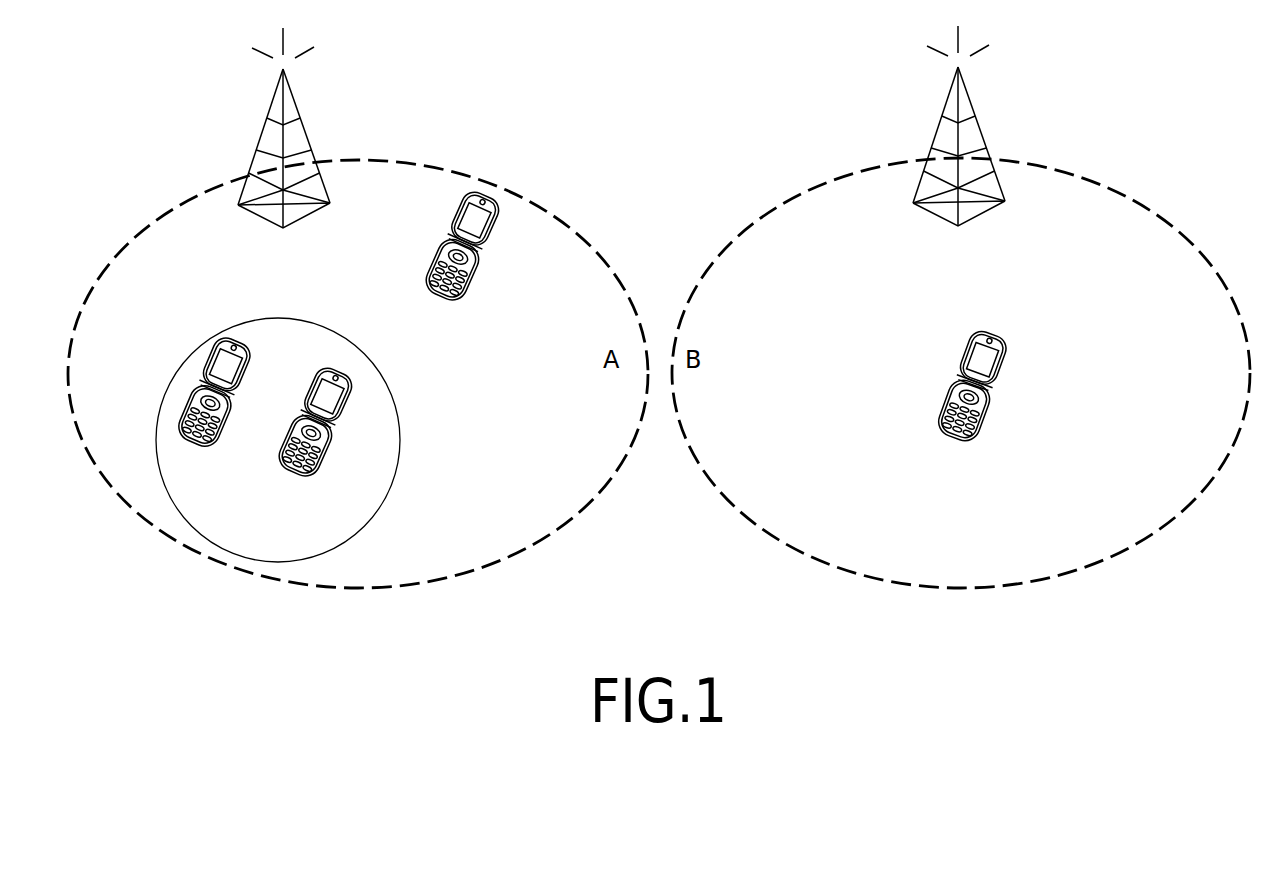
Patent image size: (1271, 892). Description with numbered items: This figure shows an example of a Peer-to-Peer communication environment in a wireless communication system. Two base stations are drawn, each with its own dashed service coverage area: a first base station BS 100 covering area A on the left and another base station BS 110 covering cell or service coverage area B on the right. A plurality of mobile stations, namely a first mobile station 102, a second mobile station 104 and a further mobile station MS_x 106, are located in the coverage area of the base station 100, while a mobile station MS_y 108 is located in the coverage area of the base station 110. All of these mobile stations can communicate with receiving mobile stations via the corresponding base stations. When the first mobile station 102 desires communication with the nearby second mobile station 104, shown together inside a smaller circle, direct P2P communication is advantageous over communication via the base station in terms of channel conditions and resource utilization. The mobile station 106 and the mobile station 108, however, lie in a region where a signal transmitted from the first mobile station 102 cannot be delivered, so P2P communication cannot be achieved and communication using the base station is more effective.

The BS 100 is at (288, 144).
The BS 110 is at (963, 143).
The MS_1 102 is at (215, 418).
The MS_2 104 is at (315, 450).
The MS_x 106 is at (489, 262).
The MS_y 108 is at (975, 401).